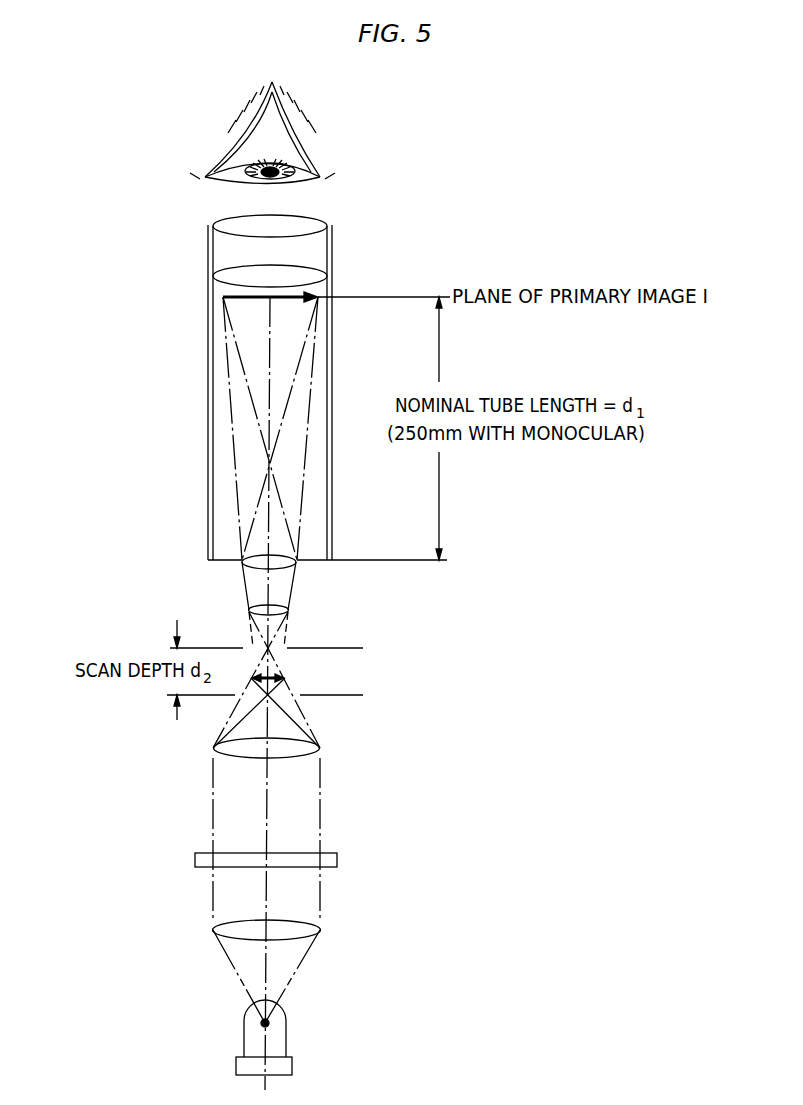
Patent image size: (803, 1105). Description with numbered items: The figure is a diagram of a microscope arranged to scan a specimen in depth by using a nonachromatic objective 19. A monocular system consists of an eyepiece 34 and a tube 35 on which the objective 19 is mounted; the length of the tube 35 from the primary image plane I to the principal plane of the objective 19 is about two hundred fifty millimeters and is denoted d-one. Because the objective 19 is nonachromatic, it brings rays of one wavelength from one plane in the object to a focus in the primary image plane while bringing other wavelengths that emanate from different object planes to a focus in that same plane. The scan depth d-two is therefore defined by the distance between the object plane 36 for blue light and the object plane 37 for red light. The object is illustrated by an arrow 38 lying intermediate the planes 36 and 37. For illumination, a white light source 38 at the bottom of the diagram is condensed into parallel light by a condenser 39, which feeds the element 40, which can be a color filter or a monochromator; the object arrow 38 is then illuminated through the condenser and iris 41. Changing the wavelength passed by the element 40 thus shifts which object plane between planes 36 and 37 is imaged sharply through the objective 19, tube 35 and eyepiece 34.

The eyepiece 34 is at (313, 220).
The tube 35 is at (208, 399).
The objective 19 is at (294, 583).
The object plane for blue light 36 is at (330, 648).
The object plane for red light 37 is at (333, 695).
The object arrow / white light source 38 is at (272, 677).
The condenser and iris 41 is at (320, 748).
The color filter or monochromator 40 is at (337, 860).
The condenser 39 is at (321, 930).